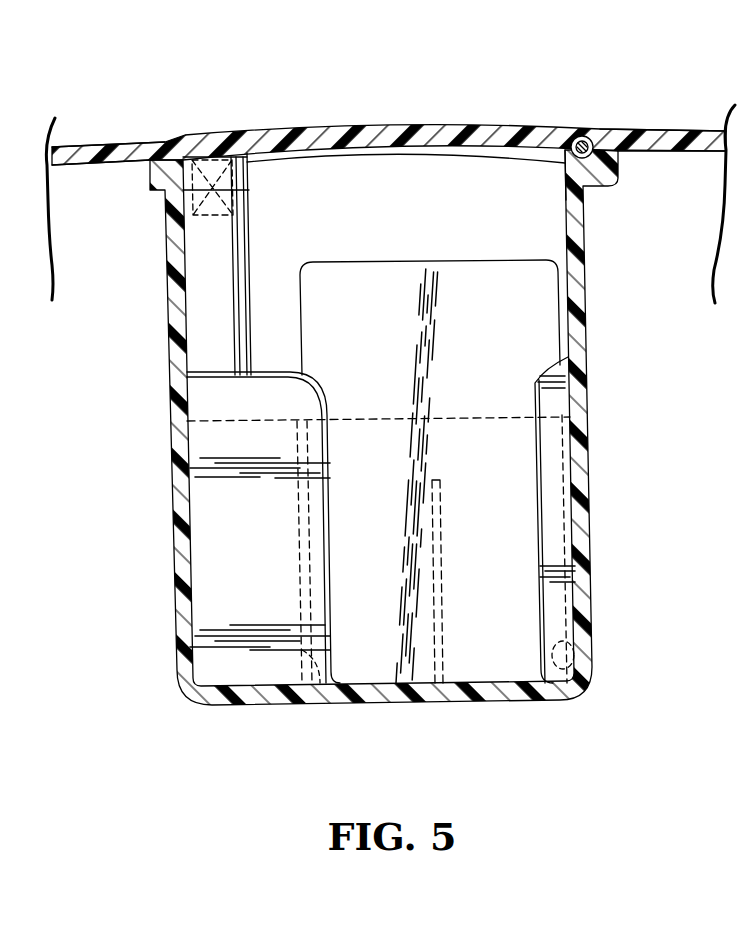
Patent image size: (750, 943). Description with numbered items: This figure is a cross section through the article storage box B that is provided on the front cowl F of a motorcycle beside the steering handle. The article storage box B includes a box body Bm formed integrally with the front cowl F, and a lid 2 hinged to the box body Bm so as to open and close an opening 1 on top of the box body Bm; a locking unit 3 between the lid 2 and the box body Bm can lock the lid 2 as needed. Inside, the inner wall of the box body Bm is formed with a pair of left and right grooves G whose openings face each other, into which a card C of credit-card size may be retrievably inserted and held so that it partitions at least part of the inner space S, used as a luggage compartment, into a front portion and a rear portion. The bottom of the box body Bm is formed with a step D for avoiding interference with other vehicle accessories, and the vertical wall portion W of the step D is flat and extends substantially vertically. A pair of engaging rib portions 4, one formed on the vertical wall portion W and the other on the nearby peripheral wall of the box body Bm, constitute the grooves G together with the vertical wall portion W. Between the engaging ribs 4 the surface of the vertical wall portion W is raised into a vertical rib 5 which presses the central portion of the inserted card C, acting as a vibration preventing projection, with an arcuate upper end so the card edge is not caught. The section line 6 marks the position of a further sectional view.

The opening 1 is at (315, 177).
The lid 2 is at (550, 74).
The locking unit 3 is at (266, 421).
The engaging rib portion 4 is at (322, 388).
The vertical rib 5 is at (442, 548).
The section line 6 is at (288, 585).
The article storage box B is at (389, 363).
The box body Bm is at (567, 197).
The card C is at (470, 267).
The step D is at (458, 416).
The front cowl F is at (645, 128).
The groove G is at (320, 683).
The inner space S is at (398, 224).
The vertical wall portion W is at (252, 667).